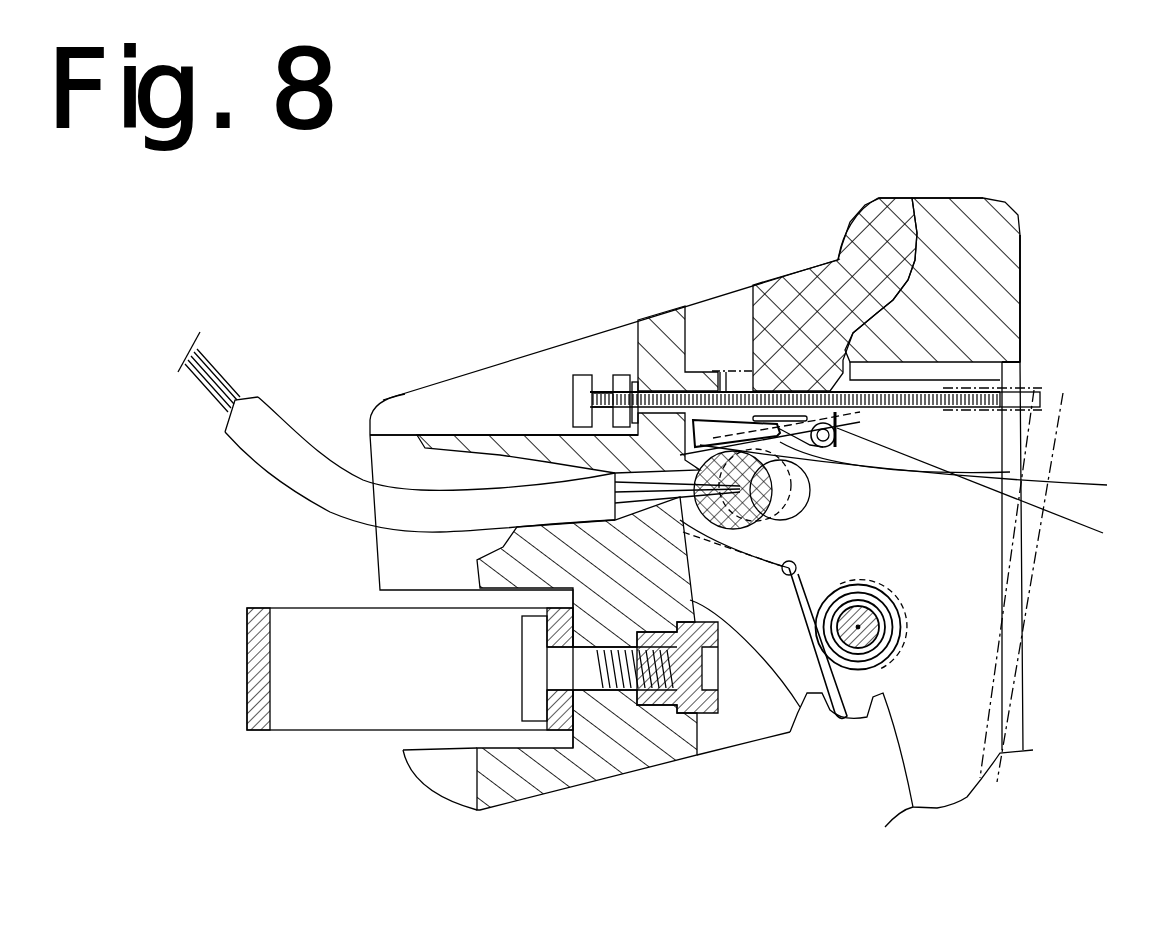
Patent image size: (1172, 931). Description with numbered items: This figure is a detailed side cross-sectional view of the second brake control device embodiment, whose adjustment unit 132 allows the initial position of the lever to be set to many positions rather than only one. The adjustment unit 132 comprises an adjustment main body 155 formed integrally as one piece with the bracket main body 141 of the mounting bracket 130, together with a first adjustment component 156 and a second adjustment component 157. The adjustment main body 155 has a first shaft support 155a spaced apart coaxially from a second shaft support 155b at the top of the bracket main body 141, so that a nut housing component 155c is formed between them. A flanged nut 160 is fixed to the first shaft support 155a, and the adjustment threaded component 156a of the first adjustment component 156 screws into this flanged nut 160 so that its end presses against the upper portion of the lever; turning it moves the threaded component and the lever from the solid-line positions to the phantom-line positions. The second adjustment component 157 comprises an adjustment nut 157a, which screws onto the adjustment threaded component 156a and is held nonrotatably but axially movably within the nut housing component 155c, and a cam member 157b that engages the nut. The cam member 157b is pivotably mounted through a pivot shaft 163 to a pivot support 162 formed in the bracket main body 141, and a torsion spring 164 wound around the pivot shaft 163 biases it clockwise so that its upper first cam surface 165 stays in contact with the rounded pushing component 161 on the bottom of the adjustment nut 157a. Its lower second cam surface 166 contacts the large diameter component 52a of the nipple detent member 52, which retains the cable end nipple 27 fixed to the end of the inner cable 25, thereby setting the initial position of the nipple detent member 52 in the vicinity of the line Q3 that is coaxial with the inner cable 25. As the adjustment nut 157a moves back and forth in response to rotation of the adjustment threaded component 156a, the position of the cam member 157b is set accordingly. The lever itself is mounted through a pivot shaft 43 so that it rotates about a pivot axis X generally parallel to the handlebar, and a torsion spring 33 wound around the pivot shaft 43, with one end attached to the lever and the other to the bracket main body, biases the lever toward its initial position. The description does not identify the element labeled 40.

The inner cable 25 is at (205, 362).
The cable end nipple 27 is at (762, 476).
The torsion spring 33 is at (792, 728).
The cylinder 40 is at (322, 731).
The pivot shaft 43 is at (859, 630).
The nipple detent member 52 is at (760, 543).
The large diameter component 52a is at (727, 528).
The mounting bracket 130 is at (953, 213).
The adjustment unit 132 is at (560, 328).
The bracket main body 141 is at (632, 770).
The adjustment main body 155 is at (820, 325).
The first shaft support 155a is at (665, 383).
The second shaft support 155b is at (853, 333).
The nut housing component 155c is at (750, 285).
The first adjustment component 156 is at (570, 380).
The adjustment threaded component 156a is at (597, 391).
The second adjustment component 157 is at (783, 368).
The adjustment nut 157a is at (695, 377).
The cam member 157b is at (830, 460).
The flanged nut 160 is at (633, 380).
The pushing component 161 is at (577, 434).
The pivot support 162 is at (883, 362).
The pivot shaft 163 is at (931, 470).
The torsion spring 164 is at (998, 490).
The first cam surface 165 is at (723, 390).
The second cam surface 166 is at (796, 566).
The line Q3 is at (990, 480).
The pivot axis X is at (902, 616).